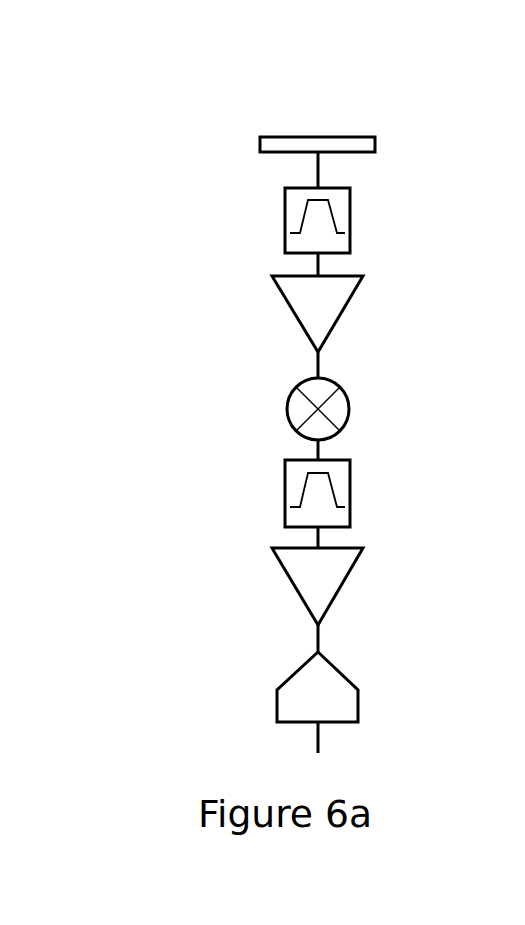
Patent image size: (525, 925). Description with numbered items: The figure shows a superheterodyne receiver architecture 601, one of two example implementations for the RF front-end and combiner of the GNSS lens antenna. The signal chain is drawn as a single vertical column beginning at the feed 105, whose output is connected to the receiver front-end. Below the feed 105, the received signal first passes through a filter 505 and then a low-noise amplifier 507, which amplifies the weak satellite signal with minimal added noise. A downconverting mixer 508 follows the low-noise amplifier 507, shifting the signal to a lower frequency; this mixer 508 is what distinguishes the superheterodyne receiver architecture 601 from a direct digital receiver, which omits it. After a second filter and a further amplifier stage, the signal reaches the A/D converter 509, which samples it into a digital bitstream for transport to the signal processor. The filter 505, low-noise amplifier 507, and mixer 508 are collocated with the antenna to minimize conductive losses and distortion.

The superheterodyne receiver architecture 601 is at (309, 385).
The feed 105 is at (255, 148).
The filter 505 is at (259, 229).
The low-noise amplifier 507 is at (270, 318).
The mixer 508 is at (275, 425).
The A/D converter 509 is at (272, 685).